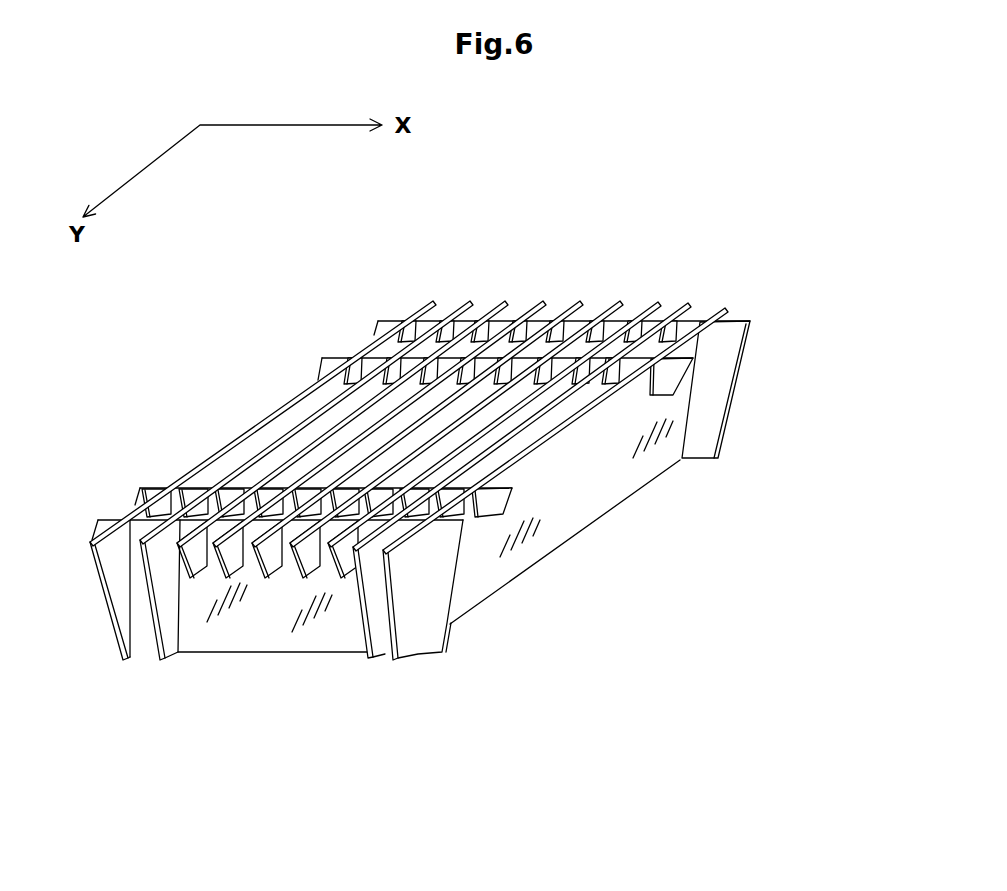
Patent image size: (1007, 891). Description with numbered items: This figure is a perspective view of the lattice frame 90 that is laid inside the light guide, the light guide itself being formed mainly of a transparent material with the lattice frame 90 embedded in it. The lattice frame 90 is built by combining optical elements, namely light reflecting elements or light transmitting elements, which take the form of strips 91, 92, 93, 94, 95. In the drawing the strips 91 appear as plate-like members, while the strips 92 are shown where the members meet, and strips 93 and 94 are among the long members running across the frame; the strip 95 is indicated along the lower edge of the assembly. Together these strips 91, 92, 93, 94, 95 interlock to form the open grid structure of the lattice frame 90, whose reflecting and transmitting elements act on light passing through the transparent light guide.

The lattice frame 90 is at (308, 316).
The strip 91 is at (732, 358).
The strip 92 is at (673, 383).
The strip 93 is at (643, 309).
The strip 94 is at (683, 305).
The strip 95 is at (553, 544).